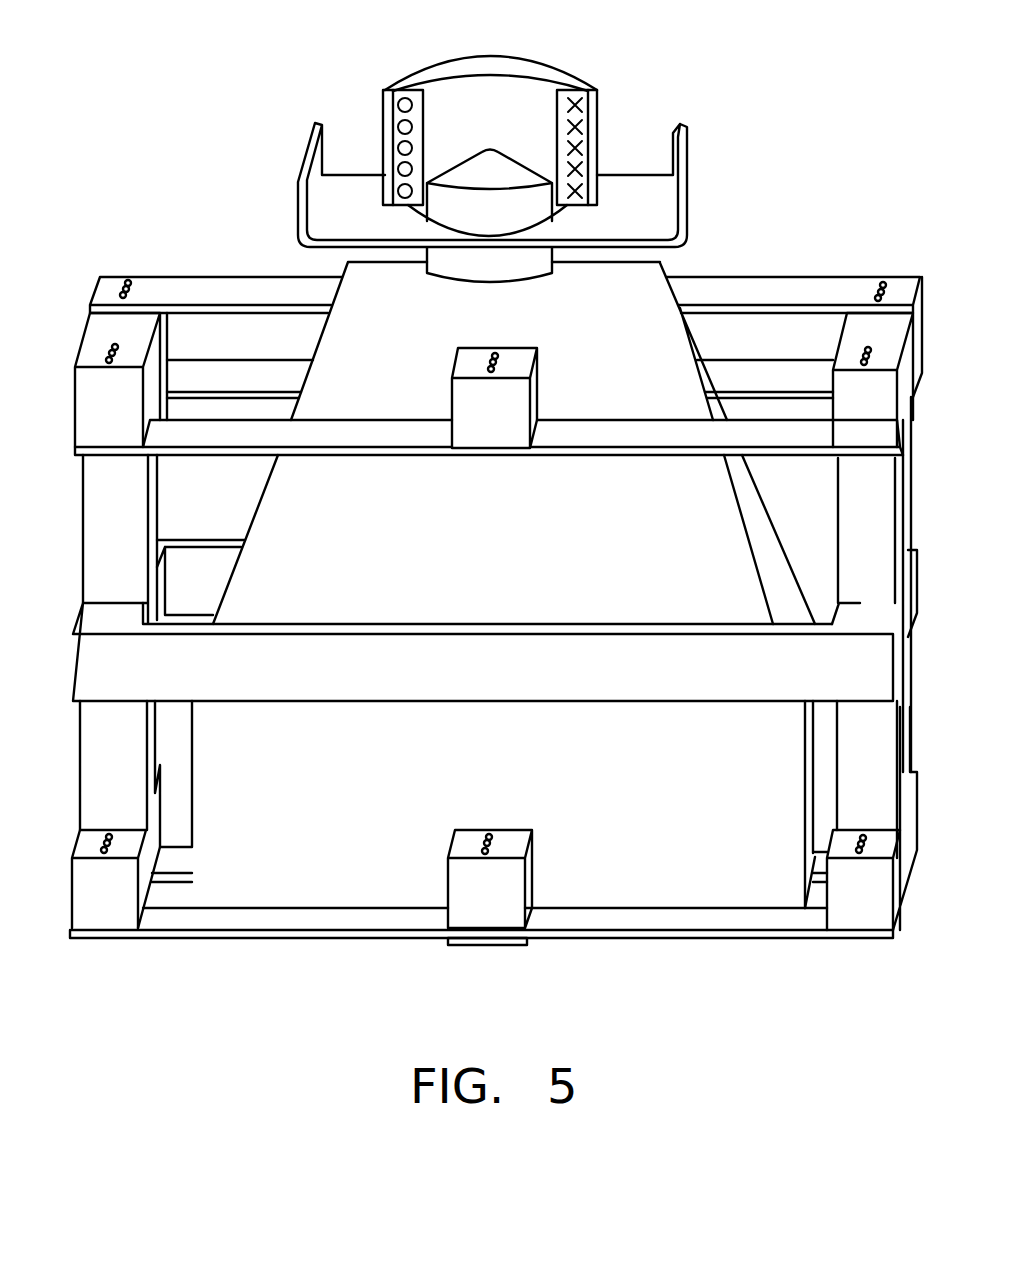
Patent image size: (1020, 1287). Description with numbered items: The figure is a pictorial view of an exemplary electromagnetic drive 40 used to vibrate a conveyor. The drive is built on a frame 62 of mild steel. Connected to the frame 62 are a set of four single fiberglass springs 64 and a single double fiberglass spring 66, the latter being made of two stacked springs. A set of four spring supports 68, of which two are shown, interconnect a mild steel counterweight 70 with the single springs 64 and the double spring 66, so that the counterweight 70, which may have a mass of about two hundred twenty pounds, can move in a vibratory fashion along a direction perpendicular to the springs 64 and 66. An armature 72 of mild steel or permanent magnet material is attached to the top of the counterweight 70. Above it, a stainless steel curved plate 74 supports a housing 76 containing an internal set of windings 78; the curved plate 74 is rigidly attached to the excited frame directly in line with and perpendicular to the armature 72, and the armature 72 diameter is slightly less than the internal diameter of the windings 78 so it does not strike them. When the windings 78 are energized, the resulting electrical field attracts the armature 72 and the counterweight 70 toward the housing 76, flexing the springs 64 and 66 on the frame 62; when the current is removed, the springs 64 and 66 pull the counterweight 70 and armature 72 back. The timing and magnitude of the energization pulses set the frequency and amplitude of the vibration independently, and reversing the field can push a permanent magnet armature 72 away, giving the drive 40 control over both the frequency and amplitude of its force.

The electromagnetic drive 40 is at (152, 222).
The frame 62 is at (527, 687).
The single fiberglass springs 64 is at (730, 378).
The double fiberglass spring 66 is at (825, 292).
The spring supports 68 is at (487, 427).
The counterweight 70 is at (527, 780).
The armature 72 is at (523, 270).
The curved plate 74 is at (490, 175).
The housing 76 is at (475, 57).
The windings 78 is at (397, 120).